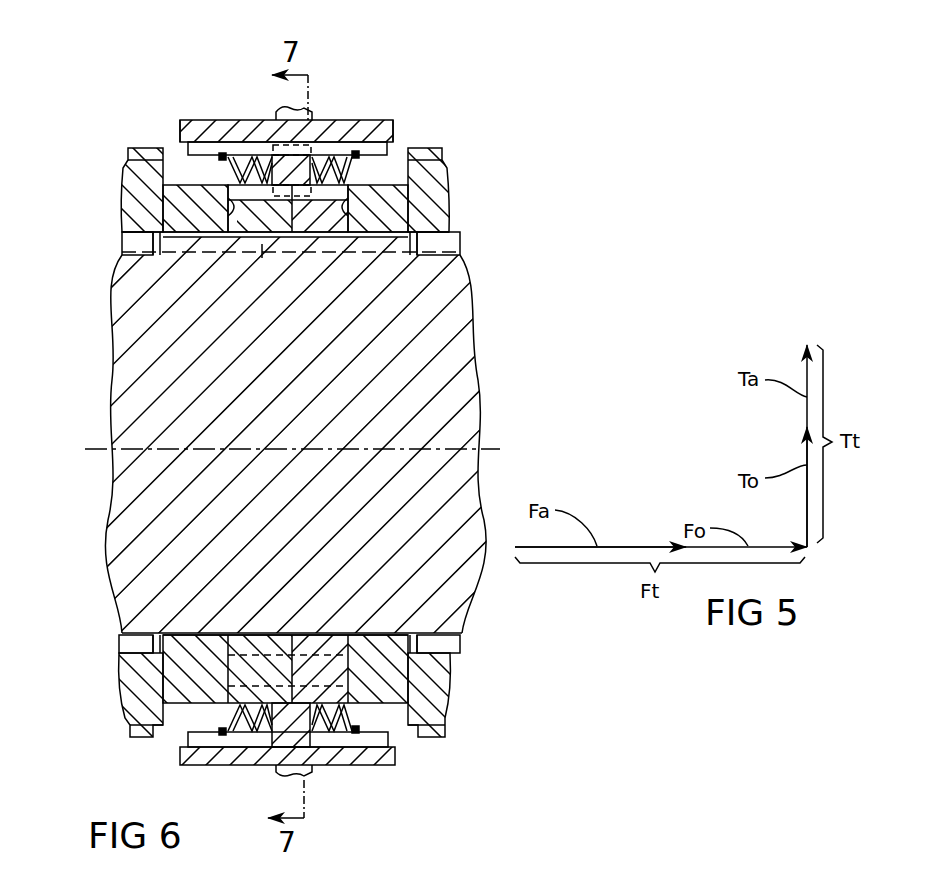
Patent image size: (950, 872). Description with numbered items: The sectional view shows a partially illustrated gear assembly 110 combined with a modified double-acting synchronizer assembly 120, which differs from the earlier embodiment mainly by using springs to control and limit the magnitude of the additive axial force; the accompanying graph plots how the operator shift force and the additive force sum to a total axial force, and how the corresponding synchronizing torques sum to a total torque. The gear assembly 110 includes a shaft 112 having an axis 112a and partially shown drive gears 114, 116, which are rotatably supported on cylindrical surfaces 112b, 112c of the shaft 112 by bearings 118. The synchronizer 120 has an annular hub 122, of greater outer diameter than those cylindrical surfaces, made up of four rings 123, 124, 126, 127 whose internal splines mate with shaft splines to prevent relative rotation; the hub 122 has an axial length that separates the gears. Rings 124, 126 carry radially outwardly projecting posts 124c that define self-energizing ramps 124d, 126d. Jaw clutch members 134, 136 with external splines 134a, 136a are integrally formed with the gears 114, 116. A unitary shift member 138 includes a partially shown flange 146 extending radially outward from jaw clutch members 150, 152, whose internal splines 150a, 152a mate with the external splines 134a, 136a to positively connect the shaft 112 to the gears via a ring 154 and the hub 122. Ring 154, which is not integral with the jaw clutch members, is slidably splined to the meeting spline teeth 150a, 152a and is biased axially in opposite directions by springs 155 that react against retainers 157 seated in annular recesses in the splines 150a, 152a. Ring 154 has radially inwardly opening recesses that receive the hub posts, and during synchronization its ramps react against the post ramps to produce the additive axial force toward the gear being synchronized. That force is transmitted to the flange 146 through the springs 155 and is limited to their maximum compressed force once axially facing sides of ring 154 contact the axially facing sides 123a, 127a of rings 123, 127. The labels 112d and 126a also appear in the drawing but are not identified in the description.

The gear assembly 110 is at (445, 42).
The shaft 112 is at (312, 407).
The axis 112a is at (497, 447).
The cylindrical surface 112b is at (150, 646).
The cylindrical surface 112c is at (455, 652).
The shaft groove 112d is at (263, 257).
The drive gear 114 is at (124, 712).
The drive gear 116 is at (452, 702).
The bearings 118 is at (138, 640).
The double-acting synchronizer assembly 120 is at (472, 735).
The annular hub 122 is at (300, 252).
The hub ring 123 is at (160, 213).
The axially facing side 123a is at (168, 258).
The hub ring 124 is at (243, 236).
The post 124c is at (233, 706).
The self-energizing ramp 124d is at (230, 192).
The hub ring 126 is at (340, 237).
The wedge ring face 126a is at (352, 707).
The self-energizing ramp 126d is at (360, 160).
The hub ring 127 is at (413, 213).
The axially facing side 127a is at (420, 256).
The jaw clutch member 134 is at (128, 149).
The external splines 134a is at (123, 170).
The jaw clutch member 136 is at (450, 136).
The external splines 136a is at (440, 153).
The unitary shift member 138 is at (368, 101).
The flange 146 is at (276, 108).
The jaw clutch member 150 is at (178, 116).
The internal splines 150a is at (212, 740).
The jaw clutch member 152 is at (395, 117).
The internal splines 152a is at (365, 740).
The ring 154 is at (302, 700).
The springs 155 is at (332, 158).
The retainers 157 is at (221, 152).